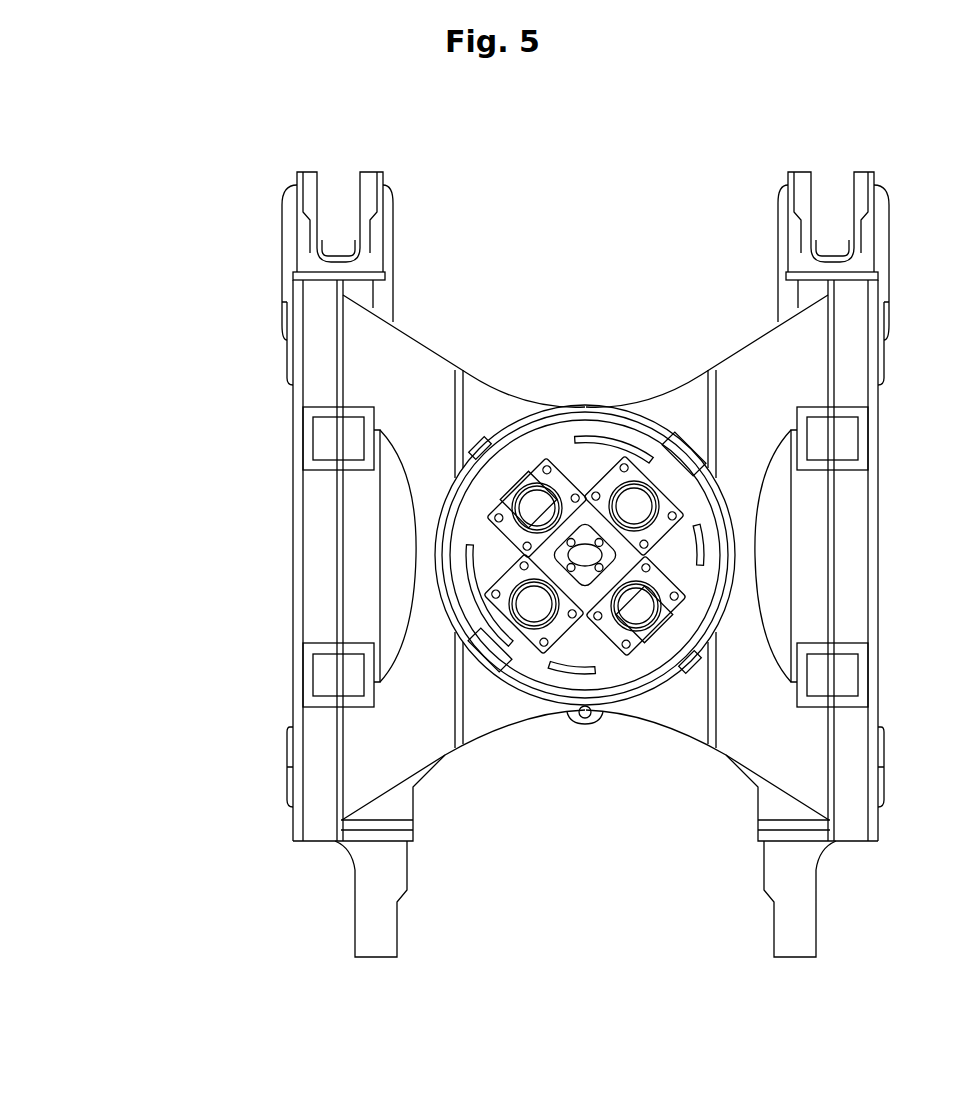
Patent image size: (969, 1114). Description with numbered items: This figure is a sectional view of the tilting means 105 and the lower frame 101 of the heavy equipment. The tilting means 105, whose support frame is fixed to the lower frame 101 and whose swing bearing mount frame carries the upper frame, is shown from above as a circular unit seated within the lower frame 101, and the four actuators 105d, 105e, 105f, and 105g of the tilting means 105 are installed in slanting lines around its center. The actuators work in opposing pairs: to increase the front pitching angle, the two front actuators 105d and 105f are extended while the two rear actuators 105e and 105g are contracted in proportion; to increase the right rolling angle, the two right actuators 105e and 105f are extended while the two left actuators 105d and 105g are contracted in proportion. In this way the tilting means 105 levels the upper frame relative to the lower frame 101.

The lower frame 101 is at (497, 403).
The tilting means 105 is at (585, 503).
The actuator 105d is at (523, 498).
The actuator 105e is at (645, 620).
The actuator 105f is at (640, 502).
The actuator 105g is at (532, 615).